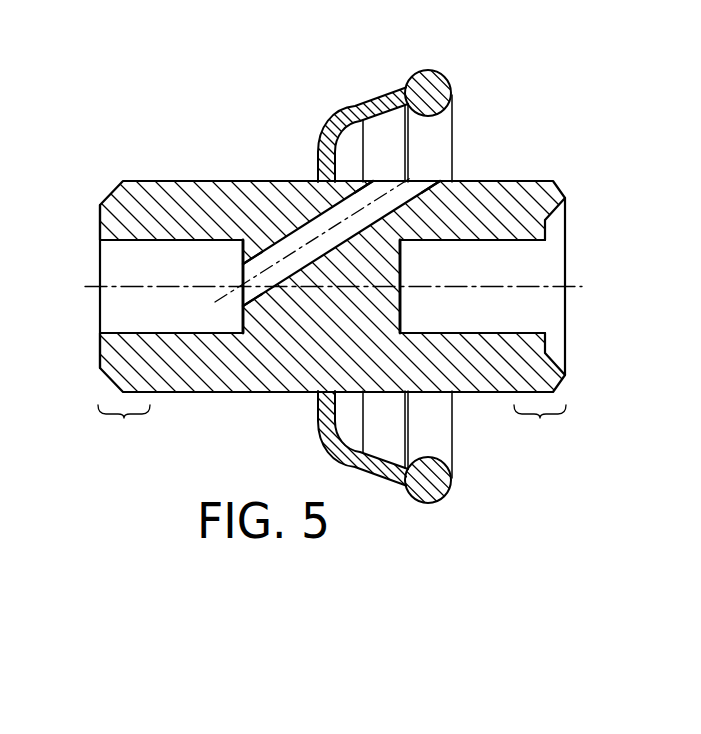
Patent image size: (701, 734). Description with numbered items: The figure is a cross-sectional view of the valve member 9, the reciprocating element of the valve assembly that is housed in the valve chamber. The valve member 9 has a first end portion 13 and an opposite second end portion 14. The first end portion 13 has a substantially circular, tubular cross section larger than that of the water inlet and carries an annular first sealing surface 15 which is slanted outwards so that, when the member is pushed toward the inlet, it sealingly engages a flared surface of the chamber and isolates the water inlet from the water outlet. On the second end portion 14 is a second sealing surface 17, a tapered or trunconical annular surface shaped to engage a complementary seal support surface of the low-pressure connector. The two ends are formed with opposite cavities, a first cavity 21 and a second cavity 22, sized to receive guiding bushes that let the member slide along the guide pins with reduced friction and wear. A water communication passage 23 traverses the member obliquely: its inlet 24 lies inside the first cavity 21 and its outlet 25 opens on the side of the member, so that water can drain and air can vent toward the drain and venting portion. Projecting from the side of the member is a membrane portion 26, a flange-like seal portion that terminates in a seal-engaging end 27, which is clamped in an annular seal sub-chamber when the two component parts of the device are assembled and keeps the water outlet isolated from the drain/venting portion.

The valve member 9 is at (370, 280).
The first end portion 13 is at (124, 425).
The second end portion 14 is at (540, 425).
The first sealing surface 15 is at (100, 368).
The second sealing surface 17 is at (567, 378).
The first cavity 21 is at (108, 262).
The second cavity 22 is at (540, 262).
The water communication passage 23 is at (266, 293).
The inlet of the communication passage 24 is at (243, 280).
The outlet of the communication passage 25 is at (405, 183).
The membrane portion 26 is at (343, 114).
The seal-engaging end 27 is at (437, 502).